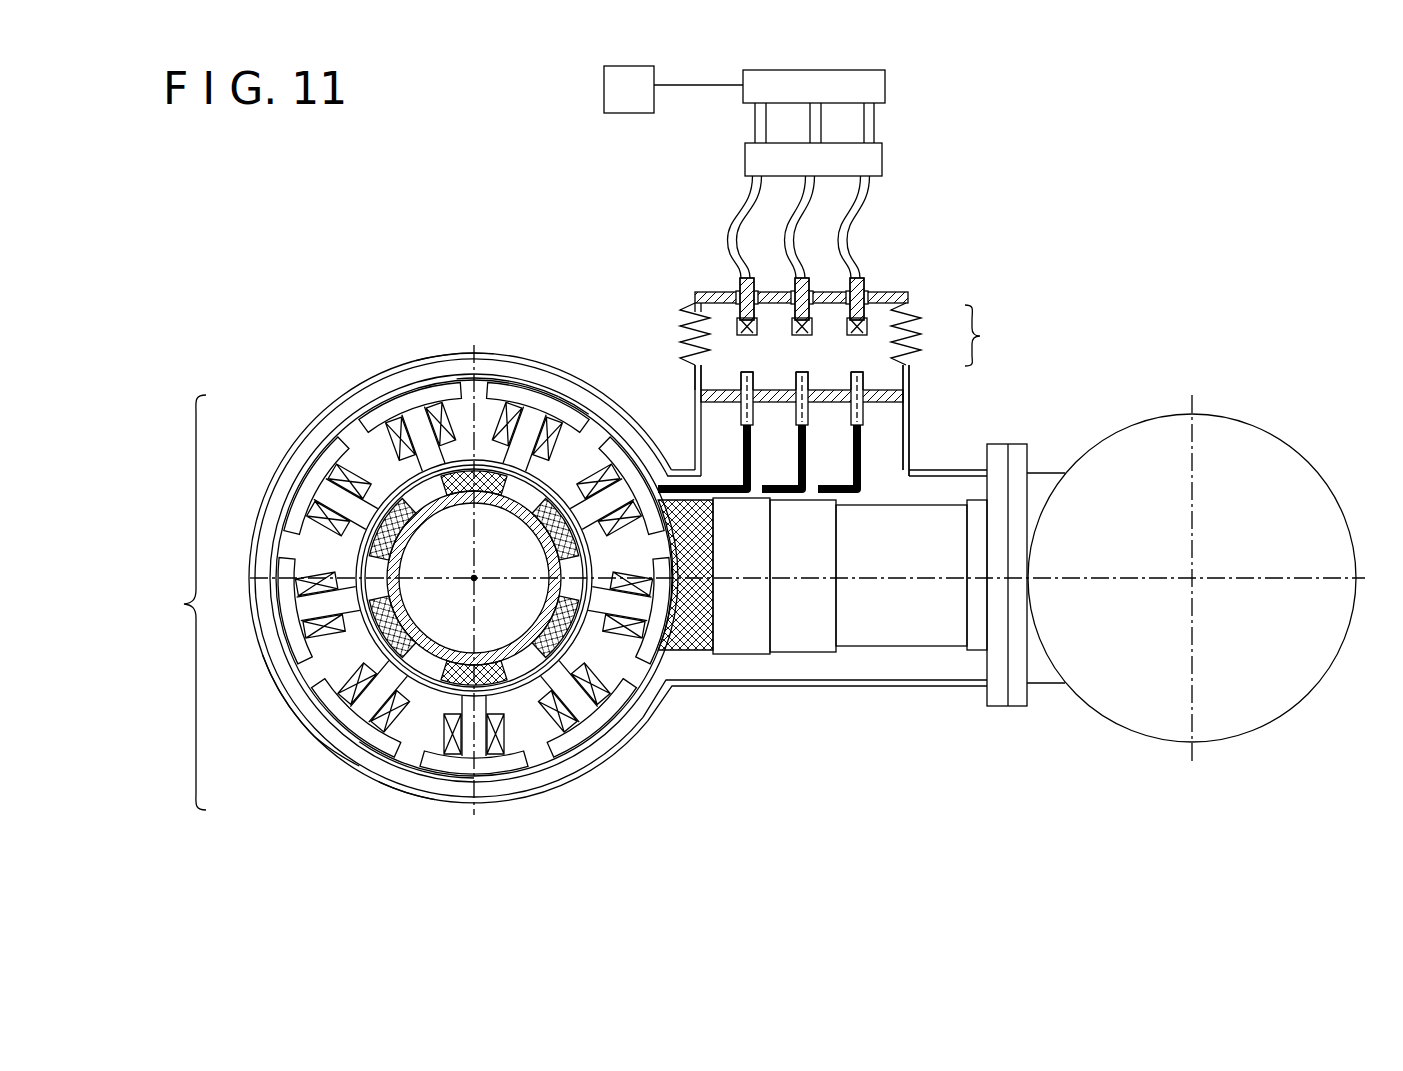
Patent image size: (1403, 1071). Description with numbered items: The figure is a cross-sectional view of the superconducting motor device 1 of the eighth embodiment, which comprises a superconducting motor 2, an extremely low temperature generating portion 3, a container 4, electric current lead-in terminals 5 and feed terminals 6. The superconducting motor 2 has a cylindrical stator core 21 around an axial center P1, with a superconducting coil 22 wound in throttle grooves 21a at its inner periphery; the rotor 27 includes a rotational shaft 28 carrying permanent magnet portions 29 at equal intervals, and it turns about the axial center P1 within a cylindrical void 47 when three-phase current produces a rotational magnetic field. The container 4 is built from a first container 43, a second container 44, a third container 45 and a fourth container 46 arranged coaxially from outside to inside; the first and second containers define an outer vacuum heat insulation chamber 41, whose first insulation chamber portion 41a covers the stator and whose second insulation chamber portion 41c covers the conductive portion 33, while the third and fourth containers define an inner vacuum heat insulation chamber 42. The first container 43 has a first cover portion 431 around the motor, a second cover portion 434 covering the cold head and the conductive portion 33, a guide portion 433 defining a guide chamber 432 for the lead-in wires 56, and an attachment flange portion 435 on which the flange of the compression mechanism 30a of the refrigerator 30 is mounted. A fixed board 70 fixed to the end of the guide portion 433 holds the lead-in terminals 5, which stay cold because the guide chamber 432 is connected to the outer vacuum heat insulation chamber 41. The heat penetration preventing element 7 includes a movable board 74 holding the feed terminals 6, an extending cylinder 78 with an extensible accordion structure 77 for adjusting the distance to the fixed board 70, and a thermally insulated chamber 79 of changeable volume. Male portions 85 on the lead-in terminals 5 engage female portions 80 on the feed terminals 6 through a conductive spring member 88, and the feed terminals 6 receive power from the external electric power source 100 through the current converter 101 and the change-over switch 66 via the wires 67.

The superconducting motor device 1 is at (179, 602).
The superconducting motor 2 is at (161, 602).
The extremely low temperature generating portion 3 is at (1060, 425).
The container 4 is at (466, 806).
The electric current lead-in terminals 5 is at (741, 412).
The feed terminals 6 is at (742, 280).
The heat penetration preventing element 7 is at (850, 390).
The stator core 21 is at (576, 760).
The throttle grooves 21a is at (426, 398).
The superconducting coil 22 is at (440, 412).
The rotor 27 is at (404, 610).
The rotational shaft 28 is at (400, 554).
The permanent magnet portions 29 is at (416, 522).
The refrigerator 30 is at (1165, 413).
The compression mechanism 30a is at (1192, 413).
The conductive portion 33 is at (716, 553).
The outer vacuum heat insulation chamber 41 is at (440, 360).
The first insulation chamber portion 41a is at (407, 575).
The second insulation chamber portion 41c is at (878, 686).
The inner vacuum heat insulation chamber 42 is at (360, 414).
The first container 43 is at (490, 378).
The second container 44 is at (523, 388).
The third container 45 is at (556, 398).
The fourth container 46 is at (302, 716).
The void 47 is at (480, 626).
The electric current lead-in wires 56 is at (723, 485).
The change-over switch 66 is at (882, 160).
The conductor wire 67 is at (793, 207).
The fixed board 70 is at (701, 395).
The movable board 74 is at (928, 297).
The extensible accordion structure 77 is at (688, 310).
The extending cylinder 78 is at (690, 372).
The thermally insulated chamber 79 is at (680, 336).
The female portions 80 is at (702, 296).
The male portions 85 is at (748, 378).
The spring member 88 is at (760, 290).
The external electric power source 100 is at (627, 113).
The current converter 101 is at (885, 92).
The first cover portion 431 is at (332, 766).
The guide chamber 432 is at (905, 413).
The guide portion 433 is at (905, 428).
The second cover portion 434 is at (996, 440).
The attachment flange portion 435 is at (1002, 708).
The axial center P1 is at (476, 578).